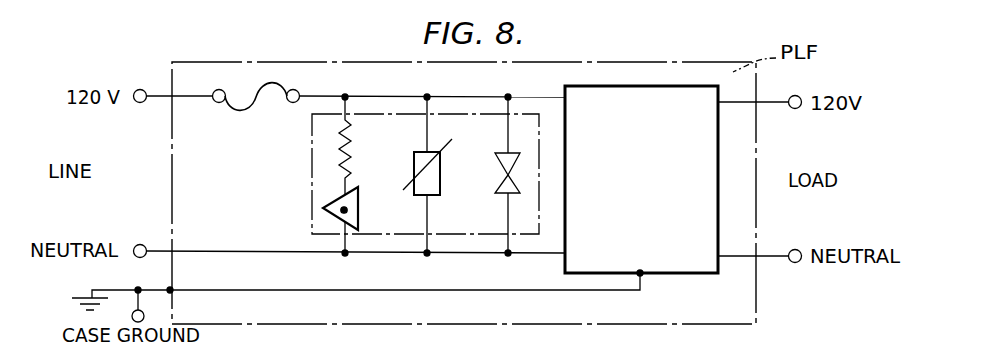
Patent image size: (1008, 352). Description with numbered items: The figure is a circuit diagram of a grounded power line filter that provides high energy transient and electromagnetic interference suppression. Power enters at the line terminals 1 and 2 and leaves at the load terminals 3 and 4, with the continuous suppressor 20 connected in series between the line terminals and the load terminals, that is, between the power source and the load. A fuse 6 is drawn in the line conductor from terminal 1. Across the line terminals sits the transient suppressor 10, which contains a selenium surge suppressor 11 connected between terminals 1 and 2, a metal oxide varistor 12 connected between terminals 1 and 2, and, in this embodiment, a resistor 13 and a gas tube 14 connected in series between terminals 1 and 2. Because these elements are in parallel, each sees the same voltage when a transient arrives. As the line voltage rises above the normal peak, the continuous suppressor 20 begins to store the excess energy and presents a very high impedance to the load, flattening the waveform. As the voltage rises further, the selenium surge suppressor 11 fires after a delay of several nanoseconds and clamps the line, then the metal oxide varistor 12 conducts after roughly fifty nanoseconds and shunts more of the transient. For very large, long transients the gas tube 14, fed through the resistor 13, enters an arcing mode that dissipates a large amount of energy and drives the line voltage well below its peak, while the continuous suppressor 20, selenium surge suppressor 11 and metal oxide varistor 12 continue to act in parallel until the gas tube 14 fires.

The line terminal 1 is at (142, 110).
The line terminal 2 is at (140, 262).
The load terminal 3 is at (795, 116).
The load terminal 4 is at (795, 267).
The fuse 6 is at (227, 68).
The transient suppressor 10 is at (312, 217).
The selenium surge suppressor 11 is at (505, 195).
The metal oxide varistor 12 is at (437, 157).
The resistor 13 is at (350, 129).
The gas tube 14 is at (358, 219).
The continuous suppressor 20 is at (719, 193).